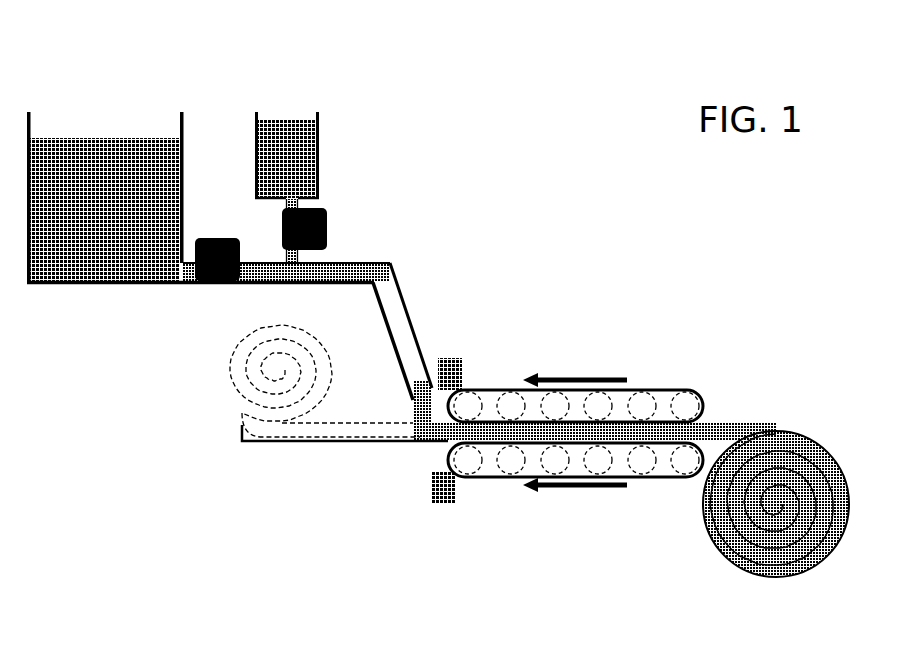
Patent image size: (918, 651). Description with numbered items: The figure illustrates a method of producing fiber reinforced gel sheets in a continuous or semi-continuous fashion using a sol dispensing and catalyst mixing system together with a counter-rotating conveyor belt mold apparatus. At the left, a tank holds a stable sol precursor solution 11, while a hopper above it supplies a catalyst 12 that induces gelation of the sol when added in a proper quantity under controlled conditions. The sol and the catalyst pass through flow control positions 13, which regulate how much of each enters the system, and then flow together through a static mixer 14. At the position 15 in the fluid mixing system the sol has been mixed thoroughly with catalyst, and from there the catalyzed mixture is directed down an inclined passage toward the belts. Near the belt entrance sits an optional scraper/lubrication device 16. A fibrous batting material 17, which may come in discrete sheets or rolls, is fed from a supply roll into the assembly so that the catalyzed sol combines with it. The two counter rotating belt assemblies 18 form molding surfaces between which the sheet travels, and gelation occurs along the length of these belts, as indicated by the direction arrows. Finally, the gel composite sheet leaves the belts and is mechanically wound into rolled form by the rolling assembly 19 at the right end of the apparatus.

The stable sol precursor solution 11 is at (102, 197).
The catalyst 12 is at (278, 111).
The flow control positions 13 is at (234, 222).
The static mixer 14 is at (333, 246).
The position where sol has been mixed thoroughly with catalyst 15 is at (376, 263).
The scraper/lubrication device 16 is at (467, 363).
The fibrous batting material 17 is at (212, 383).
The counter rotating belt assemblies 18 is at (651, 494).
The rolling assembly 19 is at (780, 433).